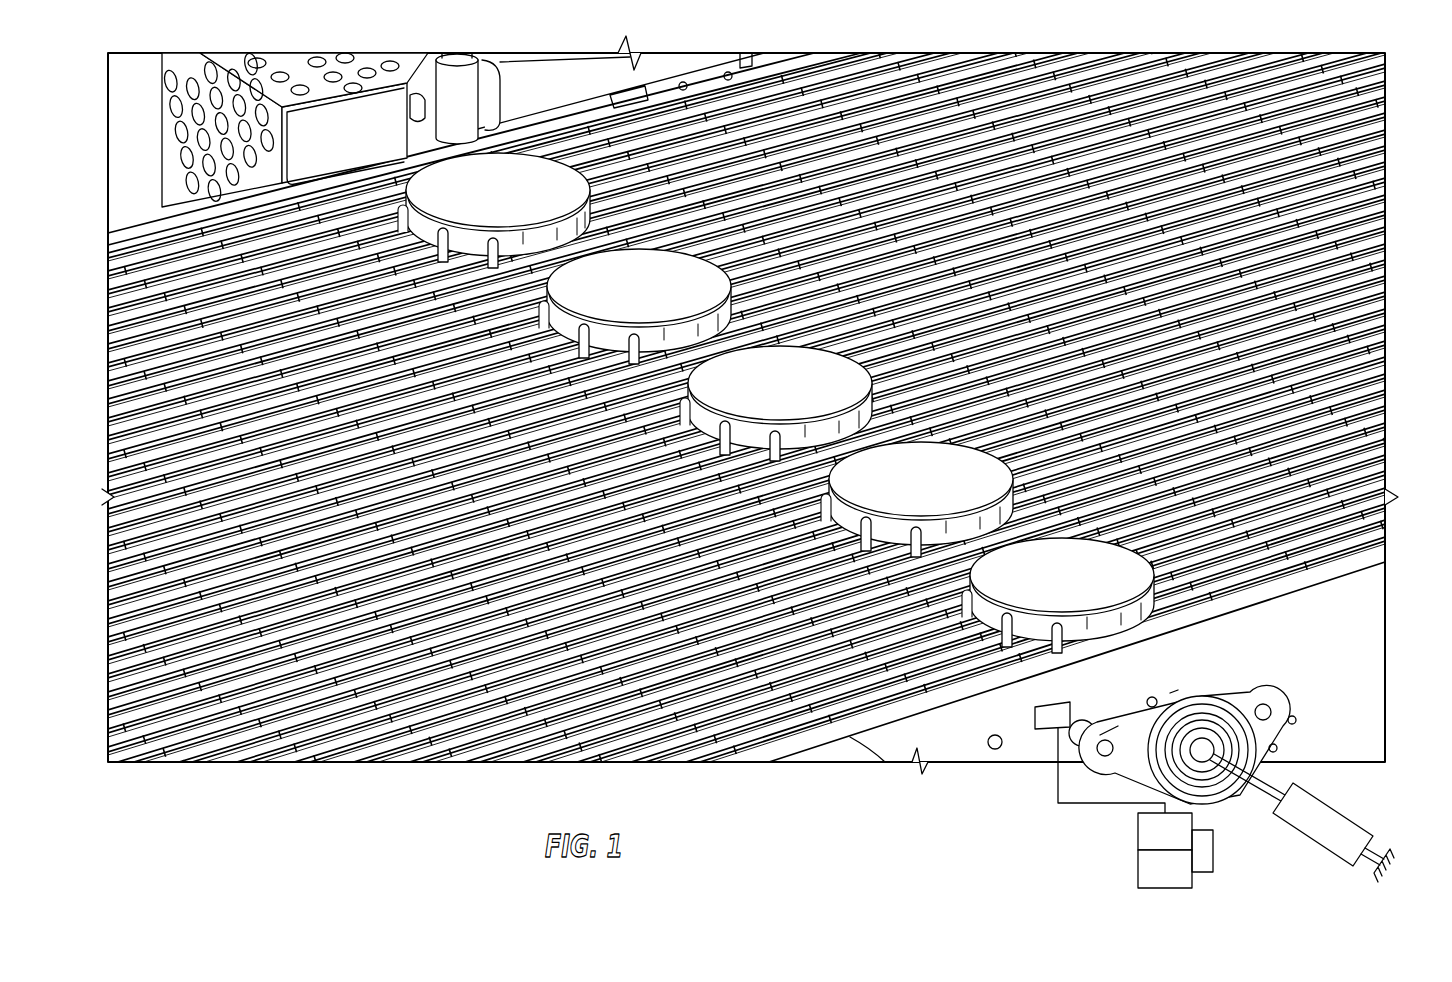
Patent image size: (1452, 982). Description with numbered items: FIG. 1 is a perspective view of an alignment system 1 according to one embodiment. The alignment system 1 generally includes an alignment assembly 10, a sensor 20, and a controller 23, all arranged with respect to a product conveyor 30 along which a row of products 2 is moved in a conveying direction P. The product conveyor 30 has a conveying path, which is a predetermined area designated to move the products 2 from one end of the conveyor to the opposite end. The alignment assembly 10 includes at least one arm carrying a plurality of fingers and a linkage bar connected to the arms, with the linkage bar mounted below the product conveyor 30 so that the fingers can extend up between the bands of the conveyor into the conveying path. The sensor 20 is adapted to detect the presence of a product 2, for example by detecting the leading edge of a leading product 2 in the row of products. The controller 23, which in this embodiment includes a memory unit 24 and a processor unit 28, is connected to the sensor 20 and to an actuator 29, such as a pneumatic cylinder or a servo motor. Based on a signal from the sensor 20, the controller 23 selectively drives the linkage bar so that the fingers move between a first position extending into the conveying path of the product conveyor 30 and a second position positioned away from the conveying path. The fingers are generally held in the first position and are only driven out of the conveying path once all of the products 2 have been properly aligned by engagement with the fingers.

The alignment system 1 is at (827, 786).
The product 2 is at (541, 180).
The alignment assembly 10 is at (1312, 705).
The sensor 20 is at (1052, 712).
The controller 23 is at (1140, 870).
The memory unit 24 is at (1148, 868).
The processor unit 28 is at (1148, 824).
The actuator 29 is at (1313, 822).
The product conveyor 30 is at (1208, 47).
The conveying direction P is at (712, 44).